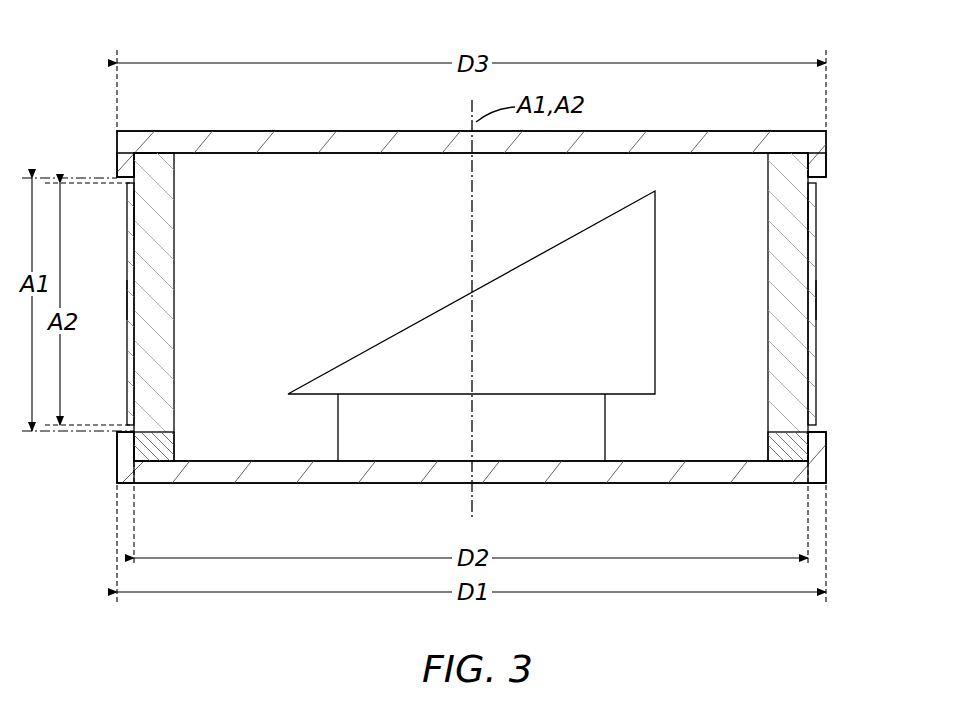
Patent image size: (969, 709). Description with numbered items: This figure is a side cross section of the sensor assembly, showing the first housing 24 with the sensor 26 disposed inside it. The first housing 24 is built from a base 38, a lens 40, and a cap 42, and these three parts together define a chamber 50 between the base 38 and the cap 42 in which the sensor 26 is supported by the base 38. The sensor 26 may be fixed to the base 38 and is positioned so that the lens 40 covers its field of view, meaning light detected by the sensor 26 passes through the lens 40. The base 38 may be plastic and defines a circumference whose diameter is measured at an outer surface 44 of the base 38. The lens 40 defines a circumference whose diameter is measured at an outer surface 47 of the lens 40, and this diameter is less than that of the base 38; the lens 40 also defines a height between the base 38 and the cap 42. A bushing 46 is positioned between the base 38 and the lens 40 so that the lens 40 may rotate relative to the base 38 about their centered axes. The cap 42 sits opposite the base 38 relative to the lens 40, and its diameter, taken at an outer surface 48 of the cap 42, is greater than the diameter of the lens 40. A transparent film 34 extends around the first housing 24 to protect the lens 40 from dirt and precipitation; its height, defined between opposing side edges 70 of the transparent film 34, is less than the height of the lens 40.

The first housing 24 is at (166, 45).
The sensor 26 is at (400, 350).
The transparent film 34 is at (130, 300).
The base 38 is at (662, 470).
The lens 40 is at (155, 268).
The cap 42 is at (282, 134).
The outer surface of the base 44 is at (117, 451).
The bushing 46 is at (162, 442).
The outer surface of the lens 47 is at (137, 216).
The outer surface of the cap 48 is at (117, 161).
The chamber 50 is at (685, 183).
The side edges of the transparent film 70 is at (130, 199).